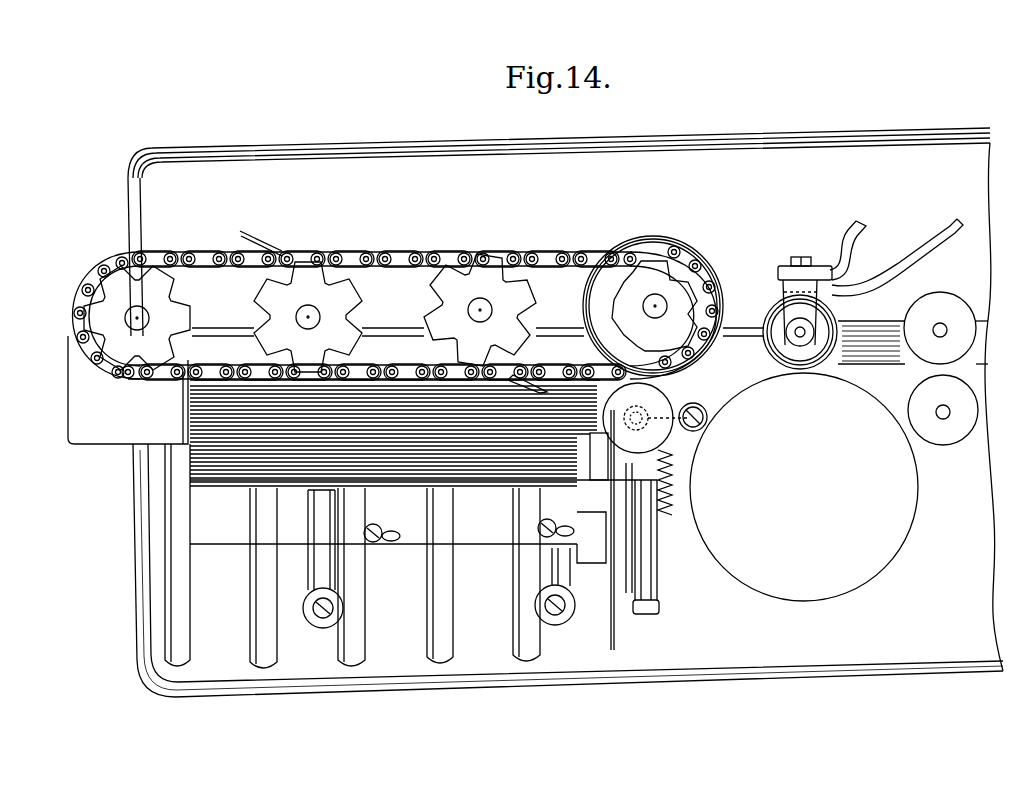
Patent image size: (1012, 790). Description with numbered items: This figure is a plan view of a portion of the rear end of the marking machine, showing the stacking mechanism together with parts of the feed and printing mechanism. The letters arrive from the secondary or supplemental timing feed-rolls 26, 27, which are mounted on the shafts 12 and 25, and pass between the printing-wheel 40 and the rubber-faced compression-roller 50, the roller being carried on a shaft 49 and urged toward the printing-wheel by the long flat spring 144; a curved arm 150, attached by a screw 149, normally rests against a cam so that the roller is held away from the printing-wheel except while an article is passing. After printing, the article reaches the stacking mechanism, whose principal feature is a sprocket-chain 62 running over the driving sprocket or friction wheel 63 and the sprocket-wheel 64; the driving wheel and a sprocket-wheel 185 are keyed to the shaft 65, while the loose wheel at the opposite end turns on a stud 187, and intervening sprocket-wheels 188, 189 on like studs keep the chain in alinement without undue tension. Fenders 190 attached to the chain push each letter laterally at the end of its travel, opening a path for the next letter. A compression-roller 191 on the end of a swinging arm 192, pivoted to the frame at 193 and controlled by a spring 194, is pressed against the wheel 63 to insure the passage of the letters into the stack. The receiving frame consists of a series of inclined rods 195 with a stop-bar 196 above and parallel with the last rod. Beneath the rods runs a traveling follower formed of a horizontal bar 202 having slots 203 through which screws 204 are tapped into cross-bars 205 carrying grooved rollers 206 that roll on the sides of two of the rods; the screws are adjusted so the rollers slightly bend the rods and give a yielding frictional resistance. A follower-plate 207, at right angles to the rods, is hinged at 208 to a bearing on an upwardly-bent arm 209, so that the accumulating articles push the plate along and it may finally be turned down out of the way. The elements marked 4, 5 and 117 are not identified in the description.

The base plate 4 is at (565, 412).
The guide bar 5 is at (388, 327).
The shaft 12 is at (938, 328).
The shaft 25 is at (943, 407).
The timing feed-roll 26 is at (910, 318).
The timing feed-roll 27 is at (912, 396).
The printing-wheel 40 is at (804, 487).
The shaft 49 is at (800, 328).
The compression-roller 50 is at (772, 350).
The sprocket-chain 62 is at (548, 246).
The sprocket-wheel (friction-wheel) 63 is at (706, 264).
The sprocket-wheel 64 is at (137, 318).
The shaft 65 is at (648, 306).
The bracket 117 is at (781, 288).
The flat spring 144 is at (948, 240).
The screw 149 is at (795, 258).
The curved arm 150 is at (848, 238).
The sprocket-wheel 185 is at (647, 318).
The stud 187 is at (172, 312).
The intervening sprocket-wheel 188 is at (308, 317).
The intervening sprocket-wheel 189 is at (480, 310).
The fender 190 is at (279, 248).
The compression-roller 191 is at (638, 418).
The swinging arm 192 is at (692, 445).
The pivot 193 is at (704, 410).
The spring 194 is at (674, 465).
The inclined rods 195 is at (190, 638).
The stop-bar 196 is at (188, 420).
The horizontal bar 202 is at (423, 525).
The slots 203 is at (396, 542).
The screws 204 is at (374, 524).
The cross-bars 205 is at (318, 568).
The grooved rollers 206 is at (318, 636).
The follower-plate 207 is at (268, 498).
The hinge 208 is at (658, 564).
The upwardly-bent arm 209 is at (622, 598).